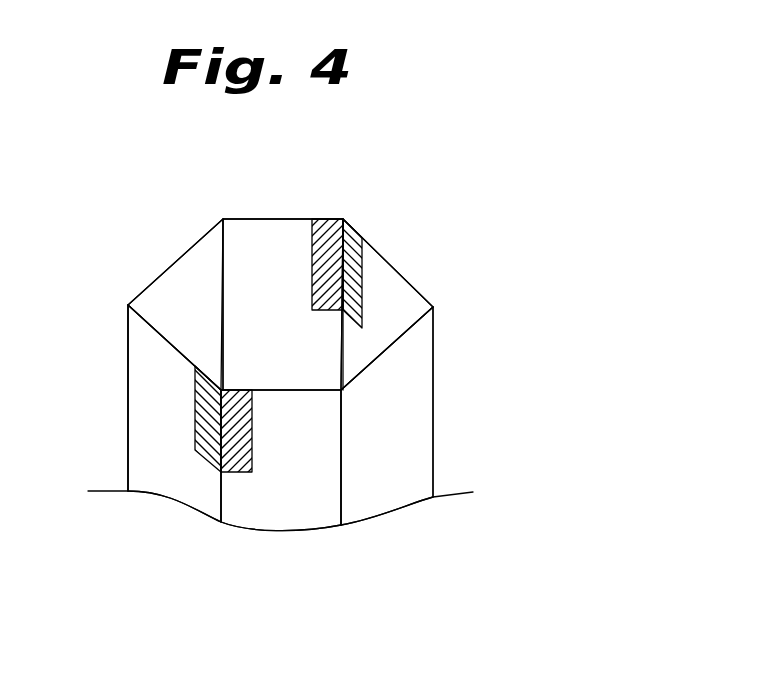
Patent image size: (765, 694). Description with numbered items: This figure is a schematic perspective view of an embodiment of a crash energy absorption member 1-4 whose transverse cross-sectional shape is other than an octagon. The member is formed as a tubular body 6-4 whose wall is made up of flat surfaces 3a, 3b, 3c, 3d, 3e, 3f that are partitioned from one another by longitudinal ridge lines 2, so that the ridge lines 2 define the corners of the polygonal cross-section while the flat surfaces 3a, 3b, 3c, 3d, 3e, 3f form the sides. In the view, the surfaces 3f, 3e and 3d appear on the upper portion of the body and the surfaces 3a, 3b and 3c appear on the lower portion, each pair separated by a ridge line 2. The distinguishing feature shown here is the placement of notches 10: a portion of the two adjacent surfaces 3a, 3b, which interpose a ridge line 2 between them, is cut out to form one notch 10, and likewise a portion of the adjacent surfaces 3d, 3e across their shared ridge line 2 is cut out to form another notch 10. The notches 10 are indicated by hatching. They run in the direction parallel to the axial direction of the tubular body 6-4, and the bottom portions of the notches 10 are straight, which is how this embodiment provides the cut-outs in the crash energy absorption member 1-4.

The crash energy absorption member 1-4 is at (401, 210).
The tubular body 6-4 is at (434, 357).
The ridge lines 2 is at (223, 297).
The flat surface 3a is at (178, 479).
The flat surface 3b is at (297, 515).
The flat surface 3c is at (405, 478).
The flat surface 3d is at (387, 283).
The flat surface 3e is at (265, 243).
The flat surface 3f is at (175, 292).
The notches 10 is at (326, 220).